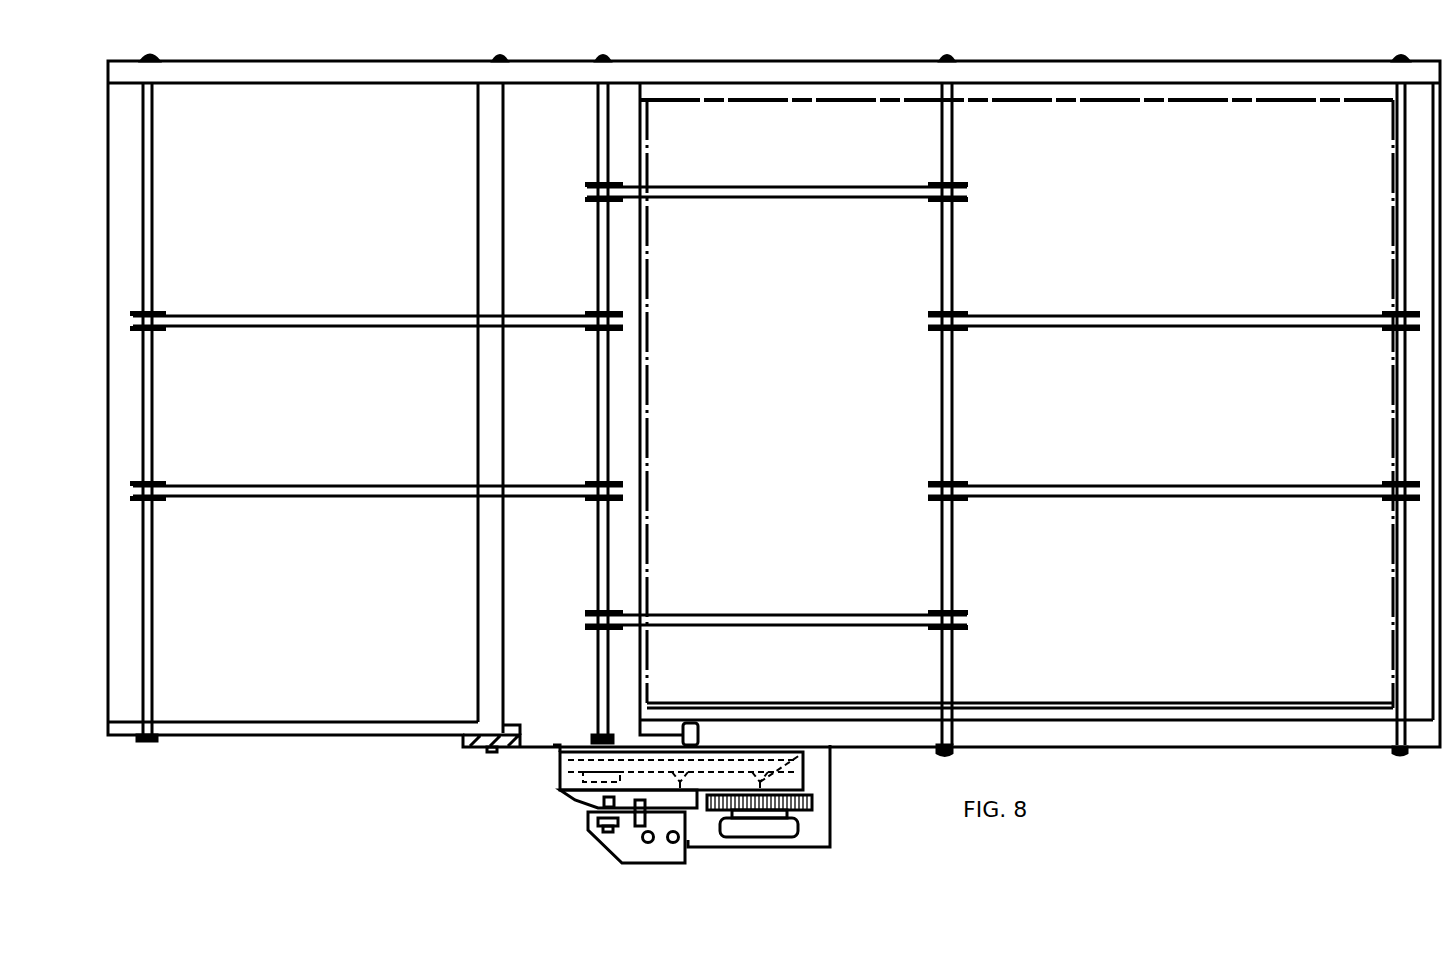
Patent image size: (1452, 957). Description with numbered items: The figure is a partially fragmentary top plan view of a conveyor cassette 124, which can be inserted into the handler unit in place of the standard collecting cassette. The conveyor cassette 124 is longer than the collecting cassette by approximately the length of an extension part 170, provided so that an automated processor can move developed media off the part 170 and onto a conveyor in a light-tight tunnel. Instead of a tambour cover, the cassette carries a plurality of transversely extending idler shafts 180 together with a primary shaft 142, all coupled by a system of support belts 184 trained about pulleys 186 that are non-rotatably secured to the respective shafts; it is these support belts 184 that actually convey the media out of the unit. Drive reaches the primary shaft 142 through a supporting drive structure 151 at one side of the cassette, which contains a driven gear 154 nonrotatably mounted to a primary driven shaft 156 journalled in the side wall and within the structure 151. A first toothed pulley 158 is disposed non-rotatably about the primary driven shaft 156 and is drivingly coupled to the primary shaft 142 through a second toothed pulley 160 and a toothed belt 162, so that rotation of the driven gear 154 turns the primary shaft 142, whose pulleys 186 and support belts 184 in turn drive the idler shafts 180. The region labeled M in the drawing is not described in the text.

The conveyor cassette 124 is at (391, 755).
The primary shaft 142 is at (598, 272).
The supporting drive structure 151 is at (803, 772).
The driven gear 154 is at (812, 802).
The primary driven shaft 156 is at (832, 752).
The first toothed pulley 158 is at (762, 770).
The second toothed pulley 160 is at (580, 768).
The toothed belt 162 is at (748, 752).
The extension part 170 is at (303, 736).
The idler shaft 180 is at (155, 200).
The support belt 184 is at (793, 187).
The pulley 186 is at (596, 183).
The mounting region M is at (647, 423).